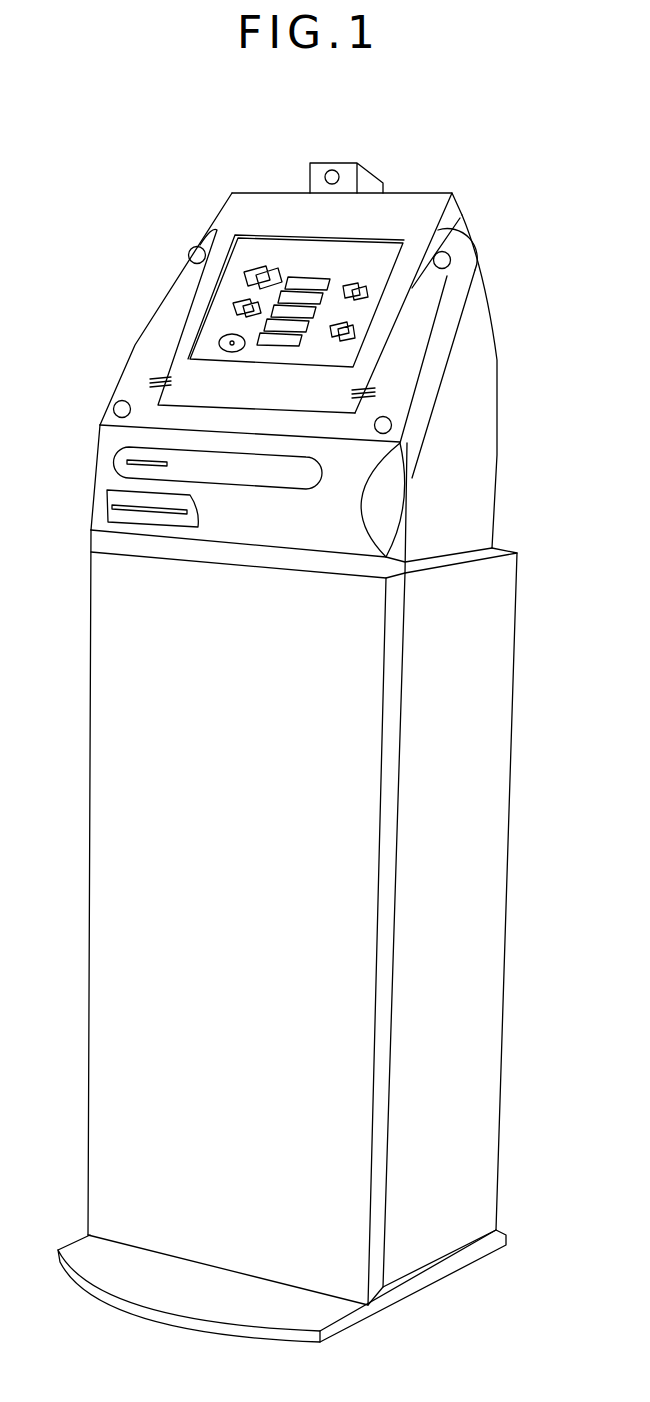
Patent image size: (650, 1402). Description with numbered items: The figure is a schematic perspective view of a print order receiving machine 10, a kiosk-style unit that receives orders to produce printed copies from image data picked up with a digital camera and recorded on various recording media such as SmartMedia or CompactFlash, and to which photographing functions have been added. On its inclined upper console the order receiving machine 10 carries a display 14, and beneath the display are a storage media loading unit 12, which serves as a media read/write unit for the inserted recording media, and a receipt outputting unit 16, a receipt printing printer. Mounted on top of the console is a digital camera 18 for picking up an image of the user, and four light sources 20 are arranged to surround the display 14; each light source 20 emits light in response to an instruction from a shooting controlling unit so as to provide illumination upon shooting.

The print order receiving machine 10 is at (177, 153).
The storage media loading unit 12 is at (124, 463).
The display 14 is at (226, 310).
The receipt outputting unit 16 is at (120, 514).
The digital camera 18 is at (310, 172).
The light source 20 is at (189, 254).